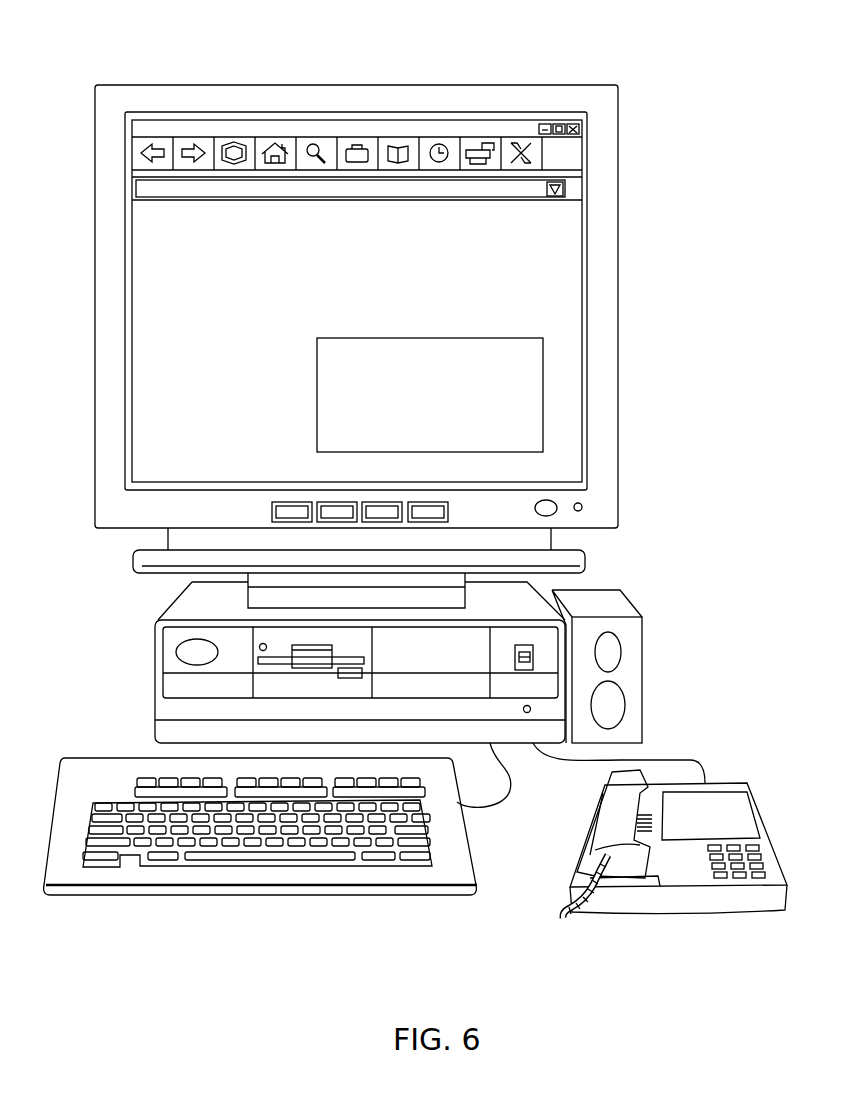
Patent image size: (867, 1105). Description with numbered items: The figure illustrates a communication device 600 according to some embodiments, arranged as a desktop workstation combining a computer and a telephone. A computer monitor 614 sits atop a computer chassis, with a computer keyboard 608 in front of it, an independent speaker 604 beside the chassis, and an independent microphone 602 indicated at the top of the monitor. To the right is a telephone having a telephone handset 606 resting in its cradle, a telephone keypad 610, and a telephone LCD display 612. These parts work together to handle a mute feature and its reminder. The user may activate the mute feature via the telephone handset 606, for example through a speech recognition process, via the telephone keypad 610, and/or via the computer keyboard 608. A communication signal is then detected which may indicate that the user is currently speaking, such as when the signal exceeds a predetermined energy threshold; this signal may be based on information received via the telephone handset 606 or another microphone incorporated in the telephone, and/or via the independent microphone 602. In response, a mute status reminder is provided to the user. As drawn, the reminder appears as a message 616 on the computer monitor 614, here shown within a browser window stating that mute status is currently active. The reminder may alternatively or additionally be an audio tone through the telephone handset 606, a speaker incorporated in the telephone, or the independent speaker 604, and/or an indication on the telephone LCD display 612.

The communication device 600 is at (684, 323).
The independent microphone 602 is at (350, 99).
The independent speaker 604 is at (598, 590).
The telephone handset 606 is at (590, 792).
The computer keyboard 608 is at (260, 897).
The telephone keypad 610 is at (755, 856).
The telephone LCD display 612 is at (728, 783).
The computer monitor 614 is at (618, 171).
The message 616 is at (317, 381).